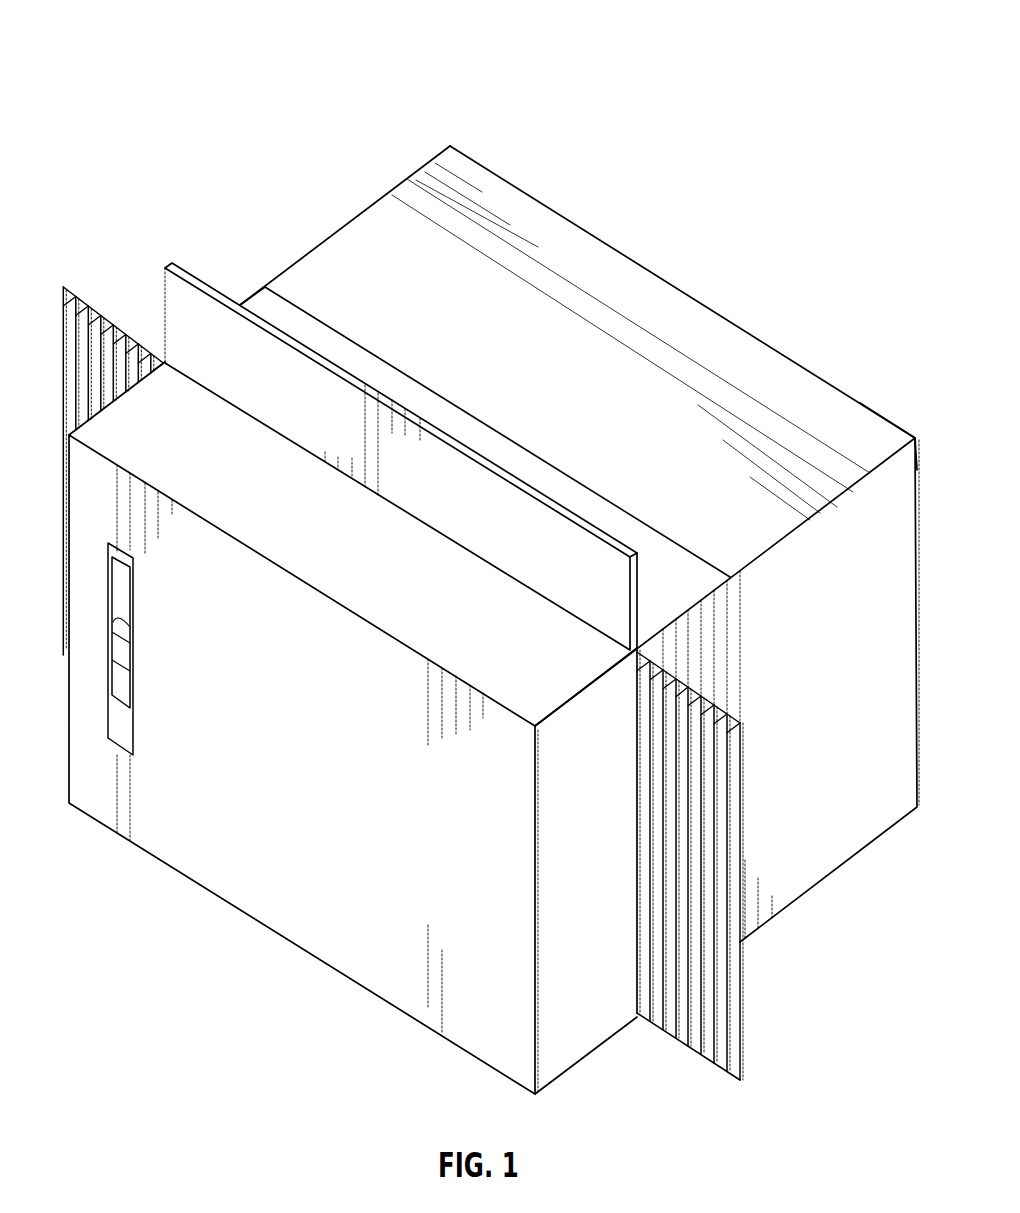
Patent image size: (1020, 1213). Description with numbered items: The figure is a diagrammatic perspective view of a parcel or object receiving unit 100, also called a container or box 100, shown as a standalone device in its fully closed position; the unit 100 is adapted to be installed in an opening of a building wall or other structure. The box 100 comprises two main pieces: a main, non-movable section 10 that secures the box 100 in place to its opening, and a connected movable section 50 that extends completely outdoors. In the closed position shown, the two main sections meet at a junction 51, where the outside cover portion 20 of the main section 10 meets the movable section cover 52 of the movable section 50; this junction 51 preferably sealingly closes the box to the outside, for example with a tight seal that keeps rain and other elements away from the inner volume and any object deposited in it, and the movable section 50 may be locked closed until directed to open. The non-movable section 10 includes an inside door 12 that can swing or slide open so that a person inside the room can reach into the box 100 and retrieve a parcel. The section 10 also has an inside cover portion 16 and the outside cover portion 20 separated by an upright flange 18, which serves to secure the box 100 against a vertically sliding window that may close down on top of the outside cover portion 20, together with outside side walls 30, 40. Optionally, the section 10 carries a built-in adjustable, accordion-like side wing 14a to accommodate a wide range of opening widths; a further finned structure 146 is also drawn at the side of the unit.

The parcel receiving unit 100 is at (477, 567).
The main non-movable section 10 is at (477, 634).
The inside door 12 is at (257, 892).
The accordion-like side wing 14a is at (77, 340).
The inside cover portion 16 is at (153, 418).
The upright flange 18 is at (163, 302).
The outside cover portion 20 is at (258, 298).
The outside side wall 30 is at (870, 835).
The outside side wall 40 is at (365, 208).
The movable section 50 is at (591, 436).
The junction 51 is at (570, 472).
The movable section cover 52 is at (847, 402).
The side heat sink fins 146 is at (737, 1017).